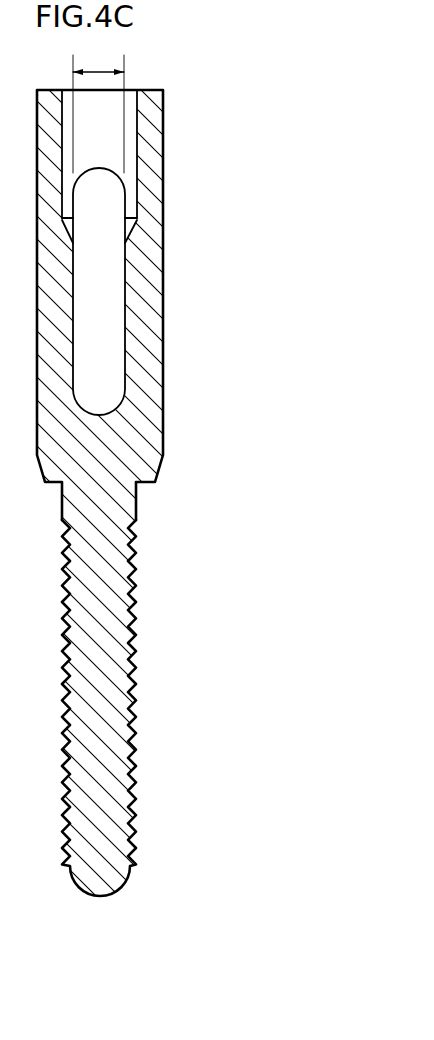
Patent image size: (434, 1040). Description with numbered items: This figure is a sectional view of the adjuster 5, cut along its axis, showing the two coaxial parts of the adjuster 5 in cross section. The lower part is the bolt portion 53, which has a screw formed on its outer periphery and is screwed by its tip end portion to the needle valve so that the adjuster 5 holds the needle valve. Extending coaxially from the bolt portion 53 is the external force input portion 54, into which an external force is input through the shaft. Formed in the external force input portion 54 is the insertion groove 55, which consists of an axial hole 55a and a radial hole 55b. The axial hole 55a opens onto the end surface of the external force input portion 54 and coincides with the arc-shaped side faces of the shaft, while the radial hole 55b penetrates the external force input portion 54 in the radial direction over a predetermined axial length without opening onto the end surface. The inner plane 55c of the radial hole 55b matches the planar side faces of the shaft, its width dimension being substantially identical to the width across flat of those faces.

The adjuster 5 is at (166, 474).
The bolt portion 53 is at (138, 708).
The external force input portion 54 is at (169, 282).
The insertion groove 55 is at (182, 252).
The axial hole 55a is at (133, 147).
The radial hole 55b is at (107, 290).
The inner plane 55c is at (163, 293).